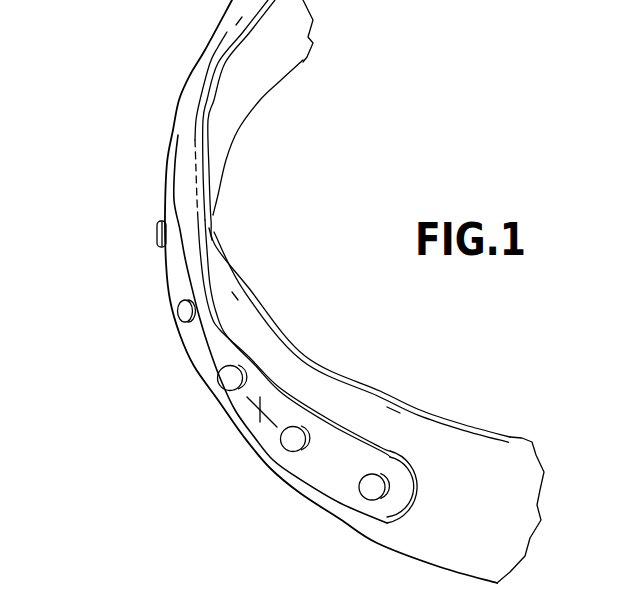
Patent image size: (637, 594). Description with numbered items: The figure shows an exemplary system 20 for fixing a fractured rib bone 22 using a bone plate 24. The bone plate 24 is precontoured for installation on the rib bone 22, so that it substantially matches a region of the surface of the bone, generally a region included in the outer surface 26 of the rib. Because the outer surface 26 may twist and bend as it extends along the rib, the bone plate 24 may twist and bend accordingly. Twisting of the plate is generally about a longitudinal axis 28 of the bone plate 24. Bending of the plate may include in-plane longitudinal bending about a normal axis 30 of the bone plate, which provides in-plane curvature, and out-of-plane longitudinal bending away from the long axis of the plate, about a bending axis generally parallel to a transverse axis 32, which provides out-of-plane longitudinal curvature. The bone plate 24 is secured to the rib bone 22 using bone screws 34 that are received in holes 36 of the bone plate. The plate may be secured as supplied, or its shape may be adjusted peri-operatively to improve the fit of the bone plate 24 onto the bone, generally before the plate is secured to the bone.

The system 20 is at (88, 65).
The rib bone 22 is at (190, 68).
The bone plate 24 is at (273, 460).
The outer surface 26 is at (458, 467).
The longitudinal axis 28 is at (353, 474).
The normal axis 30 is at (257, 417).
The transverse axis 32 is at (207, 323).
The bone screws 34 is at (157, 235).
The holes 36 is at (182, 240).